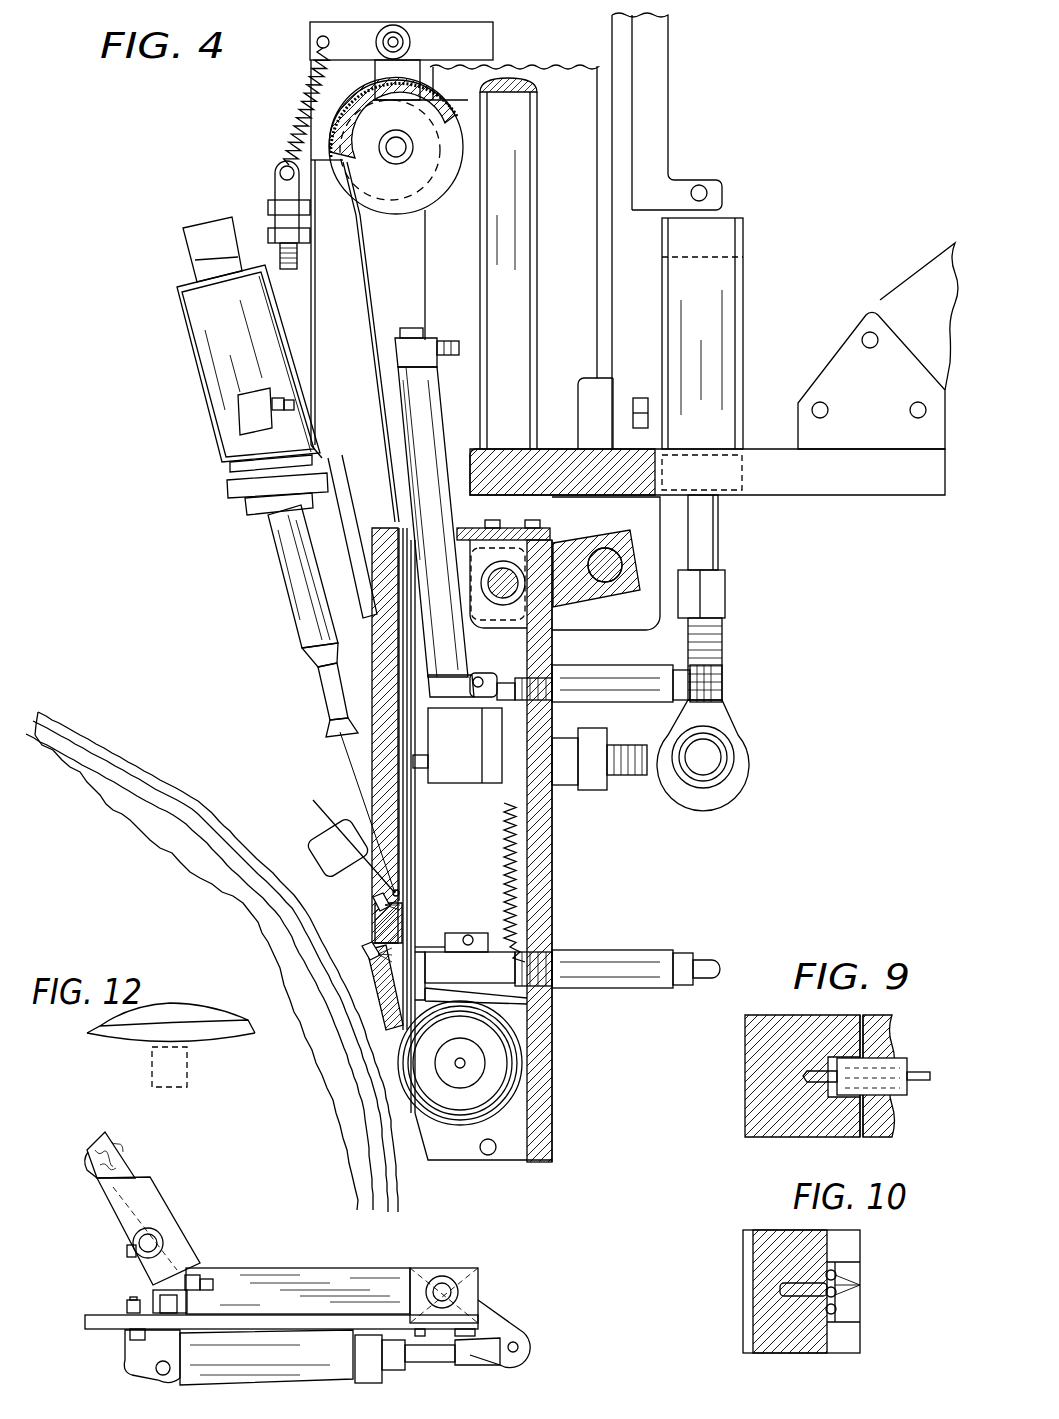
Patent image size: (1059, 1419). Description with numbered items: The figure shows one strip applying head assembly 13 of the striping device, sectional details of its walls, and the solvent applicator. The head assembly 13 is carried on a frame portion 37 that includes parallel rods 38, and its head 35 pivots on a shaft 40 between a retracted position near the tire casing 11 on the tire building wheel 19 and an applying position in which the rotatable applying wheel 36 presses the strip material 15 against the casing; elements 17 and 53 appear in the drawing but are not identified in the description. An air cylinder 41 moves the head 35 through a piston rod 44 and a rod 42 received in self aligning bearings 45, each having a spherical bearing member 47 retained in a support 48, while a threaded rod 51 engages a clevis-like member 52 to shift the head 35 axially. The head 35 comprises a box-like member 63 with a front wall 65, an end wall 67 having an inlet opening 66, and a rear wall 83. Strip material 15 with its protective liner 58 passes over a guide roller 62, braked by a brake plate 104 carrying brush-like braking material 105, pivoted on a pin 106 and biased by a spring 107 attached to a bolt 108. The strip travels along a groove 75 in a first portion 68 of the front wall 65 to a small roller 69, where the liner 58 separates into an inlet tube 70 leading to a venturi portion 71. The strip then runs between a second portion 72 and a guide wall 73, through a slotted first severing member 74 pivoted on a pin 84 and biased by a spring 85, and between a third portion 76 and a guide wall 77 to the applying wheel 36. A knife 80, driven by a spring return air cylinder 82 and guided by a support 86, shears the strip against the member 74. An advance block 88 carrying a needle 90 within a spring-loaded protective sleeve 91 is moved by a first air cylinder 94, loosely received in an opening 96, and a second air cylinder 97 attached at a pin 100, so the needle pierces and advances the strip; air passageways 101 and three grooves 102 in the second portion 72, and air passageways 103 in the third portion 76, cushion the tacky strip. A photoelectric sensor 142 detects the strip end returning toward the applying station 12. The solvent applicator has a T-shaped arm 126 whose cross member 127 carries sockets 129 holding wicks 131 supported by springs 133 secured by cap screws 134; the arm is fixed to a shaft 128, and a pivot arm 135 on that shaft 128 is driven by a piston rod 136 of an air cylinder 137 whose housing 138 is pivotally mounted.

In FIG. 4, the tire casing 11 is at (120, 752).
In FIG. 12, the tire casing 11 is at (125, 1043).
In FIG. 4, the applying station 12 is at (412, 1152).
In FIG. 4, the head assembly 13 is at (592, 868).
In FIG. 4, the strip material 15 is at (366, 280).
In FIG. 9, the strip material 15 is at (858, 1100).
In FIG. 10, the strip material 15 is at (840, 1308).
In FIG. 4, the tread 17 is at (178, 795).
In FIG. 4, the tire building wheel 19 is at (178, 830).
In FIG. 4, the head 35 is at (356, 414).
In FIG. 4, the applying wheel 36 is at (465, 1118).
In FIG. 4, the frame portion 37 is at (655, 75).
In FIG. 4, the rods 38 is at (518, 145).
In FIG. 4, the shaft 40 is at (503, 570).
In FIG. 4, the air cylinder 41 is at (712, 292).
In FIG. 4, the rod 42 is at (714, 757).
In FIG. 4, the piston rod 44 is at (703, 525).
In FIG. 4, the self aligning bearings 45 is at (745, 790).
In FIG. 4, the spherical bearing member 47 is at (720, 750).
In FIG. 4, the support 48 is at (716, 805).
In FIG. 4, the rod 51 is at (609, 584).
In FIG. 4, the clevis-like member 52 is at (575, 540).
In FIG. 4, the pivot housing 53 is at (501, 625).
In FIG. 4, the protective liner 58 is at (340, 790).
In FIG. 4, the guide roller 62 is at (413, 192).
In FIG. 4, the box-like member 63 is at (553, 828).
In FIG. 4, the front wall 65 is at (362, 758).
In FIG. 9, the front wall 65 is at (737, 1118).
In FIG. 10, the front wall 65 is at (735, 1330).
In FIG. 4, the inlet opening 66 is at (395, 527).
In FIG. 4, the end wall 67 is at (521, 530).
In FIG. 4, the first portion 68 is at (380, 668).
In FIG. 9, the first portion 68 is at (752, 1092).
In FIG. 4, the roller 69 is at (386, 893).
In FIG. 4, the inlet tube 70 is at (290, 575).
In FIG. 4, the venturi portion 71 is at (247, 421).
In FIG. 4, the second portion 72 is at (375, 940).
In FIG. 10, the second portion 72 is at (748, 1246).
In FIG. 4, the guide wall 73 is at (416, 926).
In FIG. 4, the first severing member 74 is at (434, 946).
In FIG. 4, the groove 75 is at (413, 833).
In FIG. 9, the groove 75 is at (850, 1056).
In FIG. 4, the third portion 76 is at (380, 990).
In FIG. 4, the guide wall 77 is at (416, 978).
In FIG. 4, the knife 80 is at (470, 968).
In FIG. 4, the spring return air cylinder 82 is at (606, 962).
In FIG. 4, the rear wall 83 is at (553, 900).
In FIG. 4, the pin 84 is at (470, 934).
In FIG. 4, the spring 85 is at (506, 858).
In FIG. 4, the support 86 is at (530, 1000).
In FIG. 4, the advance block 88 is at (455, 783).
In FIG. 9, the advance block 88 is at (875, 1022).
In FIG. 9, the needle 90 is at (925, 1082).
In FIG. 4, the protective sleeve 91 is at (421, 768).
In FIG. 9, the protective sleeve 91 is at (893, 1062).
In FIG. 4, the first spring return air cylinder 94 is at (427, 432).
In FIG. 4, the opening 96 is at (468, 525).
In FIG. 4, the second spring return air cylinder 97 is at (611, 690).
In FIG. 4, the pin 100 is at (480, 678).
In FIG. 4, the air passageways 101 is at (374, 917).
In FIG. 10, the air passageways 101 is at (800, 1292).
In FIG. 10, the grooves 102 is at (856, 1285).
In FIG. 4, the air passageways 103 is at (388, 1022).
In FIG. 4, the brake plate 104 is at (493, 42).
In FIG. 4, the braking material 105 is at (352, 120).
In FIG. 4, the pin 106 is at (410, 42).
In FIG. 4, the spring 107 is at (300, 100).
In FIG. 4, the bolt 108 is at (289, 269).
In FIG. 4, the T-shaped arm 126 is at (310, 1278).
In FIG. 4, the cross member 127 is at (150, 1295).
In FIG. 4, the shaft 128 is at (444, 1284).
In FIG. 4, the socket 129 is at (165, 1205).
In FIG. 4, the wick 131 is at (120, 1145).
In FIG. 12, the wick 131 is at (169, 1067).
In FIG. 4, the spring 133 is at (88, 1162).
In FIG. 4, the cap screw 134 is at (127, 1250).
In FIG. 4, the pivot arm 135 is at (495, 1320).
In FIG. 4, the piston rod 136 is at (445, 1363).
In FIG. 4, the air cylinder 137 is at (387, 1376).
In FIG. 4, the housing 138 is at (250, 1363).
In FIG. 4, the photoelectric sensor 142 is at (330, 836).